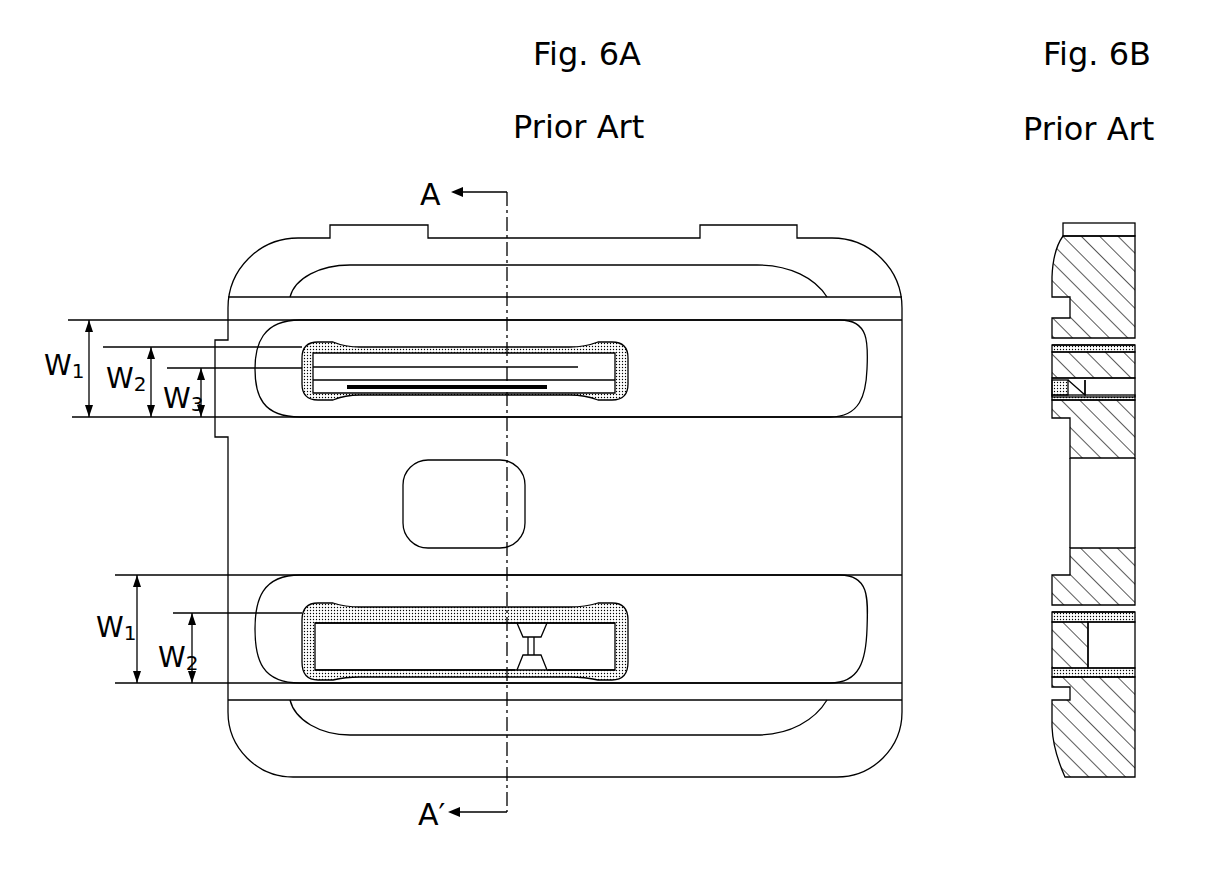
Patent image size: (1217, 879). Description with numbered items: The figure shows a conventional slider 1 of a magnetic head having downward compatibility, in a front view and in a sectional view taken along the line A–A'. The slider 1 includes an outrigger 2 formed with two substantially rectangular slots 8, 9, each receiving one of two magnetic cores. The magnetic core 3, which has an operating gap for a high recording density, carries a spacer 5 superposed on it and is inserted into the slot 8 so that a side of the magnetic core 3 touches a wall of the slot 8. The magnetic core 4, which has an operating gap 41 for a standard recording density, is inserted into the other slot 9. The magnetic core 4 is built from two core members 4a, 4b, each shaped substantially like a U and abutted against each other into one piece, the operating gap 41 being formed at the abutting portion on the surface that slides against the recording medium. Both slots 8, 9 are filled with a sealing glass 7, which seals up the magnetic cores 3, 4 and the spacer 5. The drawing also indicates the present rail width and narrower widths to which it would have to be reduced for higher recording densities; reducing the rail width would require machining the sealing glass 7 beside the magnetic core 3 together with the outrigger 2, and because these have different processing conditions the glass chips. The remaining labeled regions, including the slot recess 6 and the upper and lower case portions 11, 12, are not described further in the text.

In FIG. 6A, the slider 1 is at (913, 464).
In FIG. 6A, the outrigger 2 is at (822, 268).
In FIG. 6A, the magnetic core 3 is at (608, 400).
In FIG. 6B, the magnetic core 3 is at (1118, 385).
In FIG. 6A, the magnetic core 4 is at (368, 625).
In FIG. 6B, the magnetic core 4 is at (1072, 640).
In FIG. 6A, the core member 4a is at (452, 648).
In FIG. 6A, the core member 4b is at (603, 652).
In FIG. 6A, the operating gap 41 is at (537, 643).
In FIG. 6A, the spacer 5 is at (604, 368).
In FIG. 6B, the spacer 5 is at (1125, 361).
In FIG. 6A, the recess 6 is at (885, 372).
In FIG. 6A, the sealing glass 7 is at (515, 343).
In FIG. 6A, the slot 8 is at (557, 343).
In FIG. 6A, the slot 9 is at (293, 662).
In FIG. 6A, the upper case half 11 is at (890, 312).
In FIG. 6B, the upper case half 11 is at (1062, 307).
In FIG. 6A, the lower case half 12 is at (893, 695).
In FIG. 6B, the lower case half 12 is at (1060, 690).